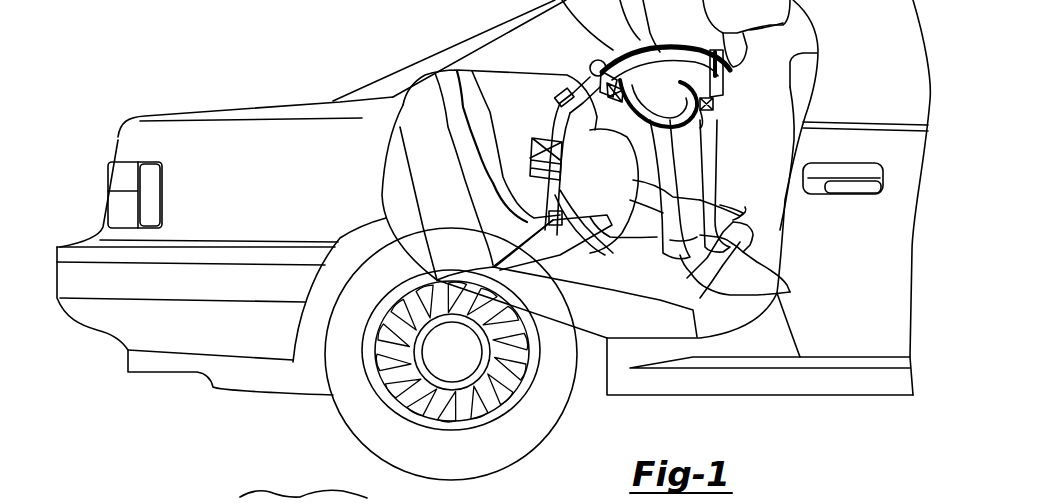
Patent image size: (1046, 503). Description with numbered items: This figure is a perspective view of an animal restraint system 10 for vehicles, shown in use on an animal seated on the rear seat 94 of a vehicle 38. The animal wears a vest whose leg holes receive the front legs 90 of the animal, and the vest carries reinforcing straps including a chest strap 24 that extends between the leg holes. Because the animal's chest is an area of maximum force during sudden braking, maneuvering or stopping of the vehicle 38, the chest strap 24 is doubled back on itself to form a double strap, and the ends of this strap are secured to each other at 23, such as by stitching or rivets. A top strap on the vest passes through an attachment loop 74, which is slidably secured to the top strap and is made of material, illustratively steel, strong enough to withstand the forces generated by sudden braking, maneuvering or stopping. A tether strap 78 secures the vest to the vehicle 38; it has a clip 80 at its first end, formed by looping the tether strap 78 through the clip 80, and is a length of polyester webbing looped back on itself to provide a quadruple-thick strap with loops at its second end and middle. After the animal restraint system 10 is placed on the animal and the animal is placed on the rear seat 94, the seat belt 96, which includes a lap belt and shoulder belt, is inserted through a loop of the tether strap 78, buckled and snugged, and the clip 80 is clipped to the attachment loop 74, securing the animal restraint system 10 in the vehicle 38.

The animal restraint system 10 is at (742, 83).
The securement of chest strap ends 23 is at (708, 98).
The chest strap 24 is at (713, 87).
The vehicle 38 is at (260, 113).
The attachment loop 74 is at (631, 48).
The tether strap 78 is at (551, 118).
The clip 80 is at (588, 66).
The front legs 90 is at (790, 292).
The rear seat 94 is at (599, 290).
The seat belt 96 is at (520, 242).